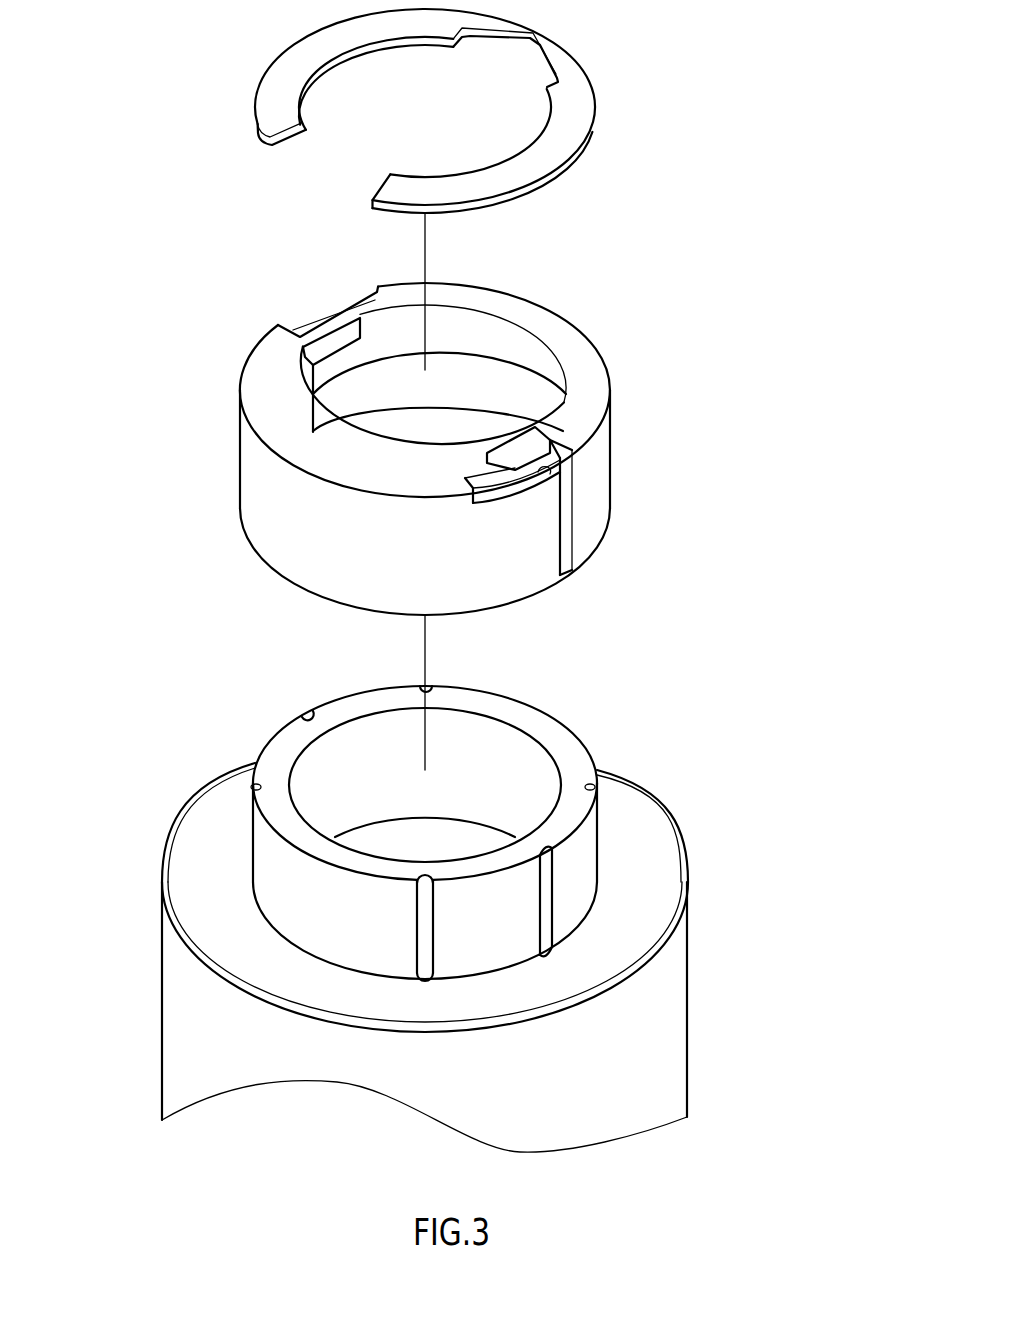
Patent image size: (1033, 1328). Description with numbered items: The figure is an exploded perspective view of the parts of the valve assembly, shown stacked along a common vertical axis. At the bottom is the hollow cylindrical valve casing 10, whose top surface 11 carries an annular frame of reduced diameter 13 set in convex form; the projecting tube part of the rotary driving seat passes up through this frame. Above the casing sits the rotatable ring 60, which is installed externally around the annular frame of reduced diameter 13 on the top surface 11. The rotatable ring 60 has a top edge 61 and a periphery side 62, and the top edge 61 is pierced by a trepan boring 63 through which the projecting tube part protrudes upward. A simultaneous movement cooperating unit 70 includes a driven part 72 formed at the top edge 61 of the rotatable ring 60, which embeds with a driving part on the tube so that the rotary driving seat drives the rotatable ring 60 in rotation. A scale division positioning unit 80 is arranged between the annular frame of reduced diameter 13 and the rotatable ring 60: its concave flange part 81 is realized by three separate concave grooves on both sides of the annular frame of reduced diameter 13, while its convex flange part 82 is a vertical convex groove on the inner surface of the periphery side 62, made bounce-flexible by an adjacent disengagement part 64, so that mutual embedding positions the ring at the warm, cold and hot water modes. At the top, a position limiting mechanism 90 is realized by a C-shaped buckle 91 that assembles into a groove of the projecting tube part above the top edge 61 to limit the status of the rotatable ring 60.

The valve casing 10 is at (478, 893).
The top surface 11 is at (645, 842).
The annular frame of reduced diameter 13 is at (540, 727).
The rotatable ring 60 is at (460, 419).
The top edge 61 is at (267, 373).
The periphery side 62 is at (268, 487).
The trepan boring 63 is at (473, 353).
The disengagement part 64 is at (568, 512).
The simultaneous movement cooperating unit 70 is at (487, 363).
The driven part 72 is at (340, 332).
The scale division positioning unit 80 is at (524, 914).
The concave flange part 81 is at (425, 913).
The convex flange part 82 is at (563, 462).
The position limiting mechanism 90 is at (496, 118).
The C-shaped buckle 91 is at (575, 73).